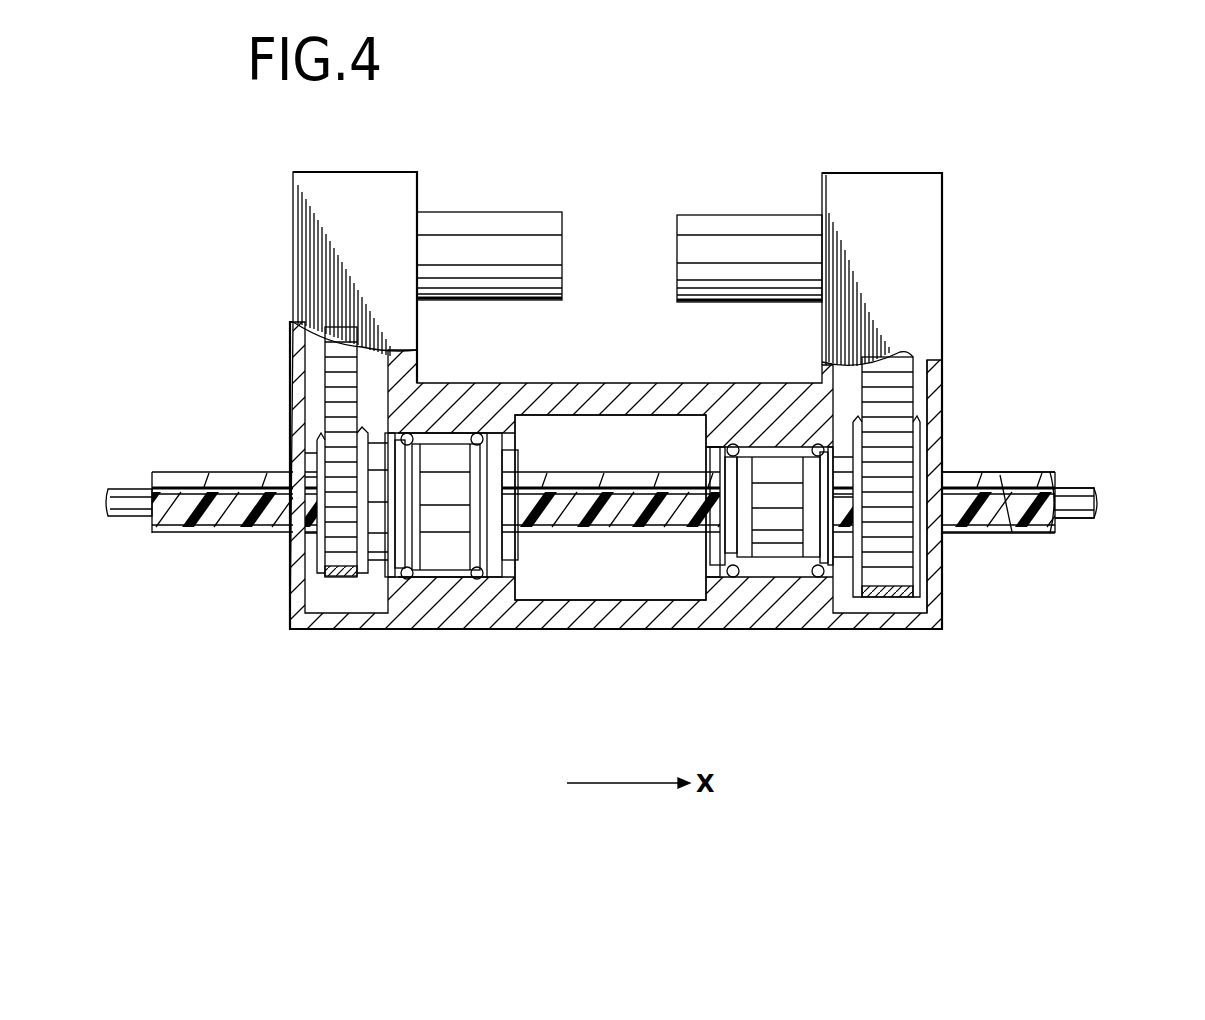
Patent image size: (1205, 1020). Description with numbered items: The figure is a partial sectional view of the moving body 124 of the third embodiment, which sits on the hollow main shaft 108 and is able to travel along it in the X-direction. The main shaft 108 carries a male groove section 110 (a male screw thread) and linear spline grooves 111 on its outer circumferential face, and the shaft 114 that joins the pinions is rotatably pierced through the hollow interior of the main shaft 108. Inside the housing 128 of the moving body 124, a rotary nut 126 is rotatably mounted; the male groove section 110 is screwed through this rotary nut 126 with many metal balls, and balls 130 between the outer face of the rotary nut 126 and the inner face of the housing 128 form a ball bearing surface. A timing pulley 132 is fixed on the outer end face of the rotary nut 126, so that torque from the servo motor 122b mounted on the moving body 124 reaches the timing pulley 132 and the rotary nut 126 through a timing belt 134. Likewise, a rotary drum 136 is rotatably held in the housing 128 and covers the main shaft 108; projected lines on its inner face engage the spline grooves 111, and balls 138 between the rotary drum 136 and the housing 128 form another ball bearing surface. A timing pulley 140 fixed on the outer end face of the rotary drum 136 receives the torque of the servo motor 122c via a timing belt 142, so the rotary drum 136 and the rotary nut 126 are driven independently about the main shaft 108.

The main shaft 108 is at (1025, 471).
The male groove section 110 is at (1018, 508).
The spline grooves 111 is at (962, 485).
The shaft 114 is at (1095, 512).
The servo motor 122b is at (764, 225).
The servo motor 122c is at (483, 222).
The moving body 124 is at (1073, 204).
The rotary nut 126 is at (778, 542).
The housing 128 is at (440, 605).
The balls 130 is at (735, 444).
The timing pulley 132 is at (933, 580).
The timing belt 134 is at (893, 372).
The rotary drum 136 is at (405, 578).
The balls 138 is at (478, 434).
The timing pulley 140 is at (315, 548).
The timing belt 142 is at (327, 365).